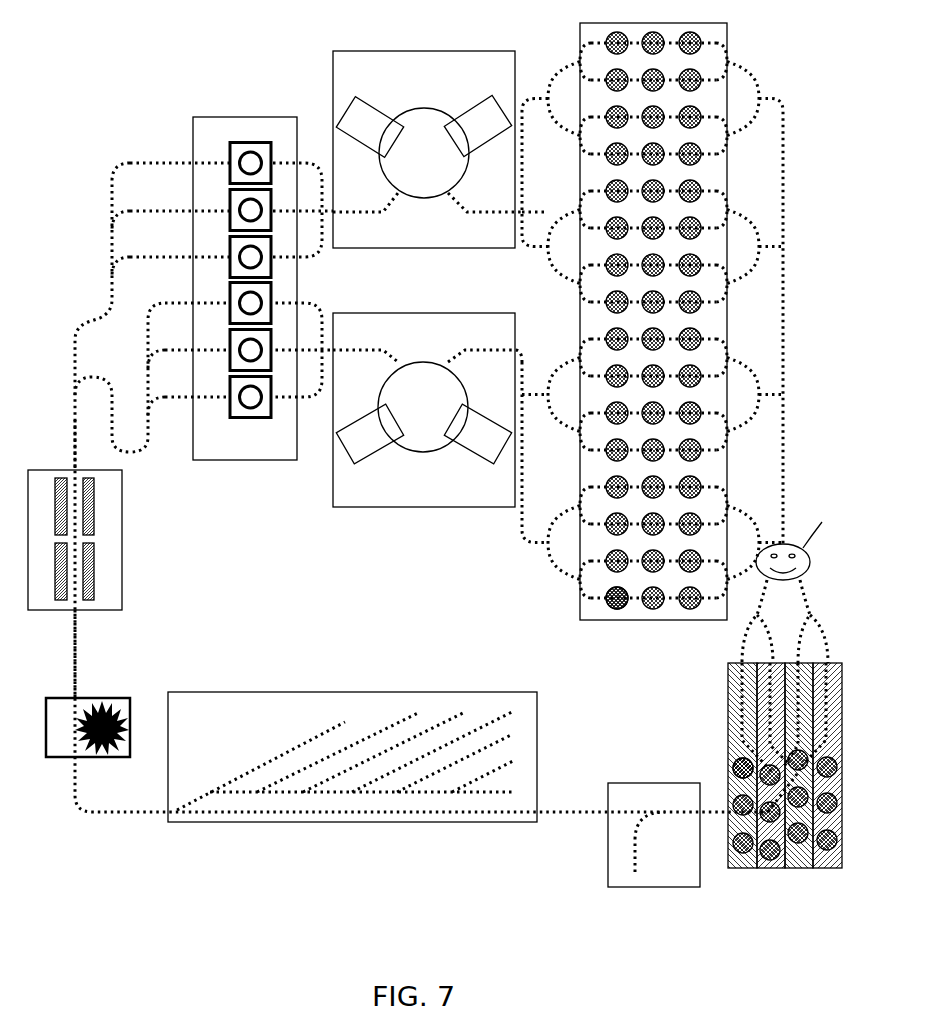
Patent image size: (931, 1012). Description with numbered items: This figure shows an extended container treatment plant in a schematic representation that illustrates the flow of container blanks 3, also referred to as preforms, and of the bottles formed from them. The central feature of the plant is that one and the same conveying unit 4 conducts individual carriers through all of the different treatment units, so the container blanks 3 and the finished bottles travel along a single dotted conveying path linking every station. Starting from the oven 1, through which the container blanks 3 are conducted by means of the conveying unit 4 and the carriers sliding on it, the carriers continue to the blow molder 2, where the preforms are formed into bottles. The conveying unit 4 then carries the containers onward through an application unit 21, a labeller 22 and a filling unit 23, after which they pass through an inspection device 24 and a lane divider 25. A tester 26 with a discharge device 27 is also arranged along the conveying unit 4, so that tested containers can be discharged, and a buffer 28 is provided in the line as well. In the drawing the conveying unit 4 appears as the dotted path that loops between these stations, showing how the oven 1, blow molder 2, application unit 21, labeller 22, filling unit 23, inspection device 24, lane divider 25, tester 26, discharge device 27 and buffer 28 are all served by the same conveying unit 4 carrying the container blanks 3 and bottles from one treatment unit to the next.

The oven 1 is at (107, 585).
The blow molder 2 is at (276, 461).
The container blanks 3 is at (619, 613).
The conveying unit 4 is at (72, 660).
The application unit 21 is at (55, 757).
The labeller 22 is at (364, 495).
The filling unit 23 is at (582, 605).
The inspection device 24 is at (806, 543).
The lane divider 25 is at (830, 868).
The tester 26 is at (604, 848).
The discharge device 27 is at (637, 876).
The buffer 28 is at (190, 702).